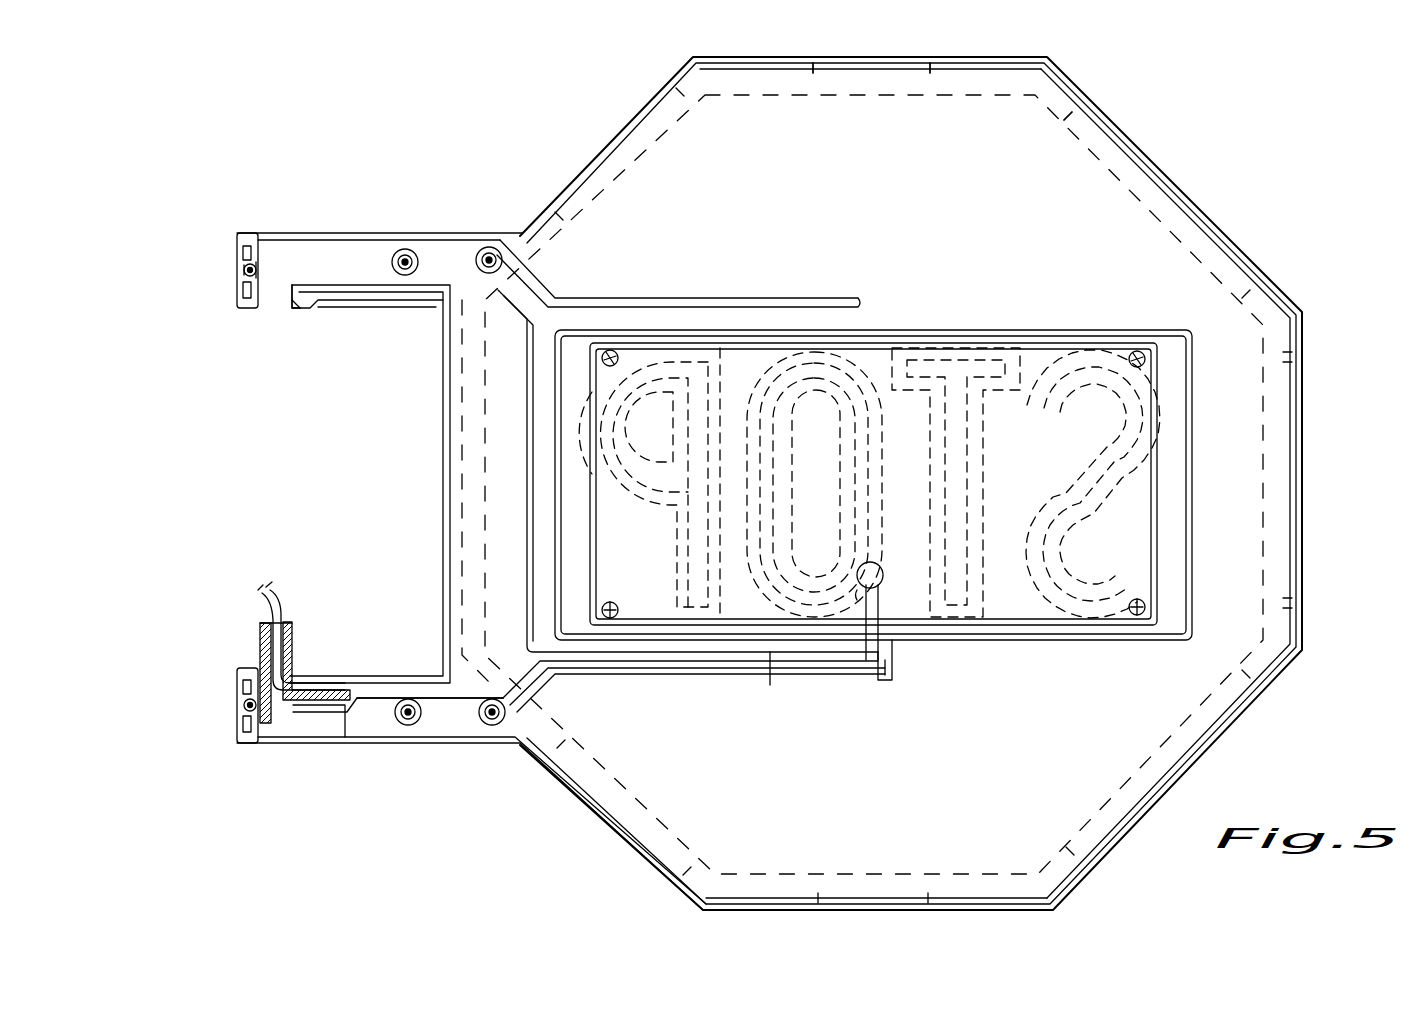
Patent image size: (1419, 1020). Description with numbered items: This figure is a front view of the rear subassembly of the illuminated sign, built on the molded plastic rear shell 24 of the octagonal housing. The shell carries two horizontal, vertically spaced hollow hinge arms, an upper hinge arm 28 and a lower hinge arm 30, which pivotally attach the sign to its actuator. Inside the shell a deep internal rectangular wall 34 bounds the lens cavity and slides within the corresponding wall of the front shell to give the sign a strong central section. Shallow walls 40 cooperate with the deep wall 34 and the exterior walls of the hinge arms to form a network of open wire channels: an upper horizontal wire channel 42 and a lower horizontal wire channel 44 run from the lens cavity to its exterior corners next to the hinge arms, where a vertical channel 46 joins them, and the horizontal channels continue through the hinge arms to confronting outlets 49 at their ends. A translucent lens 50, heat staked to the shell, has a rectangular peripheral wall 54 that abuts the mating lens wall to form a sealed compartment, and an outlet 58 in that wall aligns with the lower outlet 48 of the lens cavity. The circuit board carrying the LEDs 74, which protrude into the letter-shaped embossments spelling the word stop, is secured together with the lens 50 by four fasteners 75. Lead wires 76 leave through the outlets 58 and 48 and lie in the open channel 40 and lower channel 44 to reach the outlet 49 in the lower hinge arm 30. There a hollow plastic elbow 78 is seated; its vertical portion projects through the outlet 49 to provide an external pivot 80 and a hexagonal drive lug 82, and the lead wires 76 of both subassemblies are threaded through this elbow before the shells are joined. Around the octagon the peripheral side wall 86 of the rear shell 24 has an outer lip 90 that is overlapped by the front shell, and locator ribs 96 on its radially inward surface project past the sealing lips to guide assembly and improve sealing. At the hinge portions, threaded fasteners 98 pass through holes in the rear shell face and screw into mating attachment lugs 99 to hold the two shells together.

The rear shell 24 is at (1255, 428).
The upper hinge arm 28 is at (335, 233).
The lower hinge arm 30 is at (412, 737).
The deep internal rectangular wall 34 is at (1100, 640).
The shallow walls 40 is at (735, 300).
The upper horizontal wire channel 42 is at (450, 240).
The lower horizontal wire channel 44 is at (460, 715).
The vertical channel 46 is at (540, 418).
The lower outlet 48 is at (892, 655).
The outlets 49 is at (275, 307).
The translucent lens 50 is at (1172, 527).
The peripheral wall 54 is at (1040, 625).
The outlet 58 is at (872, 588).
The LEDs 74 is at (1040, 355).
The fasteners 75 is at (612, 352).
The lead wires 76 is at (770, 685).
The plastic elbow 78 is at (292, 722).
The external pivot 80 is at (262, 660).
The hexagonal drive lug 82 is at (262, 632).
The peripheral side wall 86 is at (1125, 135).
The outer lip 90 is at (1215, 228).
The locator ribs 96 is at (815, 73).
The threaded fasteners 98 is at (244, 270).
The attachment lugs 99 is at (405, 275).